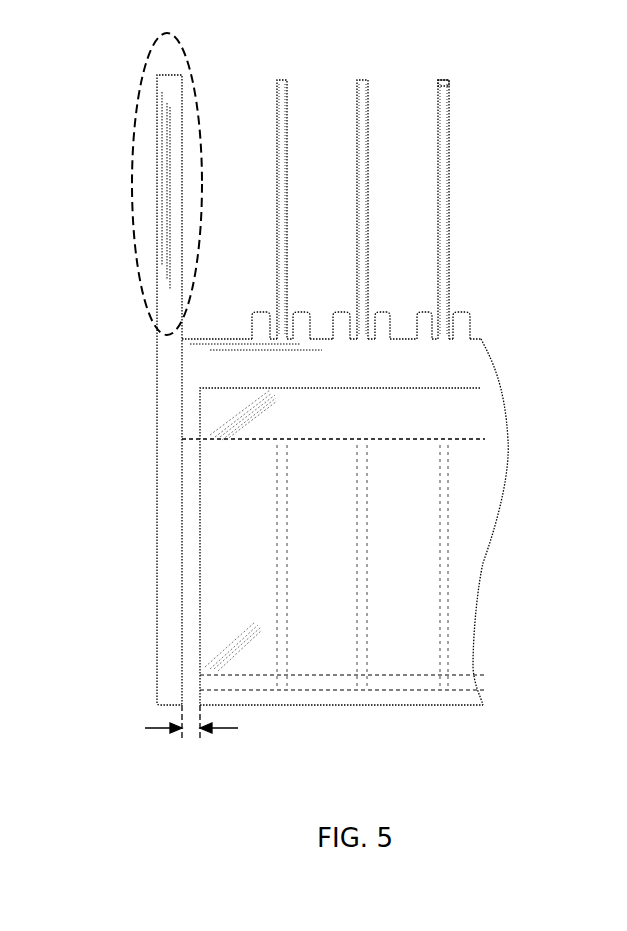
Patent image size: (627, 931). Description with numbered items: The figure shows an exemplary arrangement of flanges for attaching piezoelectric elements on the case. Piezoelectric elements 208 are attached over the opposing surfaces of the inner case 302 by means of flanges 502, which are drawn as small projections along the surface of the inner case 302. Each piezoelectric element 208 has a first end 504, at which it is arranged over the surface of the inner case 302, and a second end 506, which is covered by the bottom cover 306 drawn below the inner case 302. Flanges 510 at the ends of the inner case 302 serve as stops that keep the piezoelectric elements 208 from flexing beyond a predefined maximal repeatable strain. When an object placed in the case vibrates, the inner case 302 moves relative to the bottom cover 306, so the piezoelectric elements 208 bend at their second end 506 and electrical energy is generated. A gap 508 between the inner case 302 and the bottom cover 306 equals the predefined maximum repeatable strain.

The piezoelectric elements 208 is at (437, 189).
The inner case 302 is at (158, 380).
The bottom cover 306 is at (487, 563).
The flanges 502 is at (423, 310).
The first end 504 is at (446, 87).
The second end 506 is at (447, 341).
The gap 508 is at (190, 733).
The flanges 510 is at (130, 188).